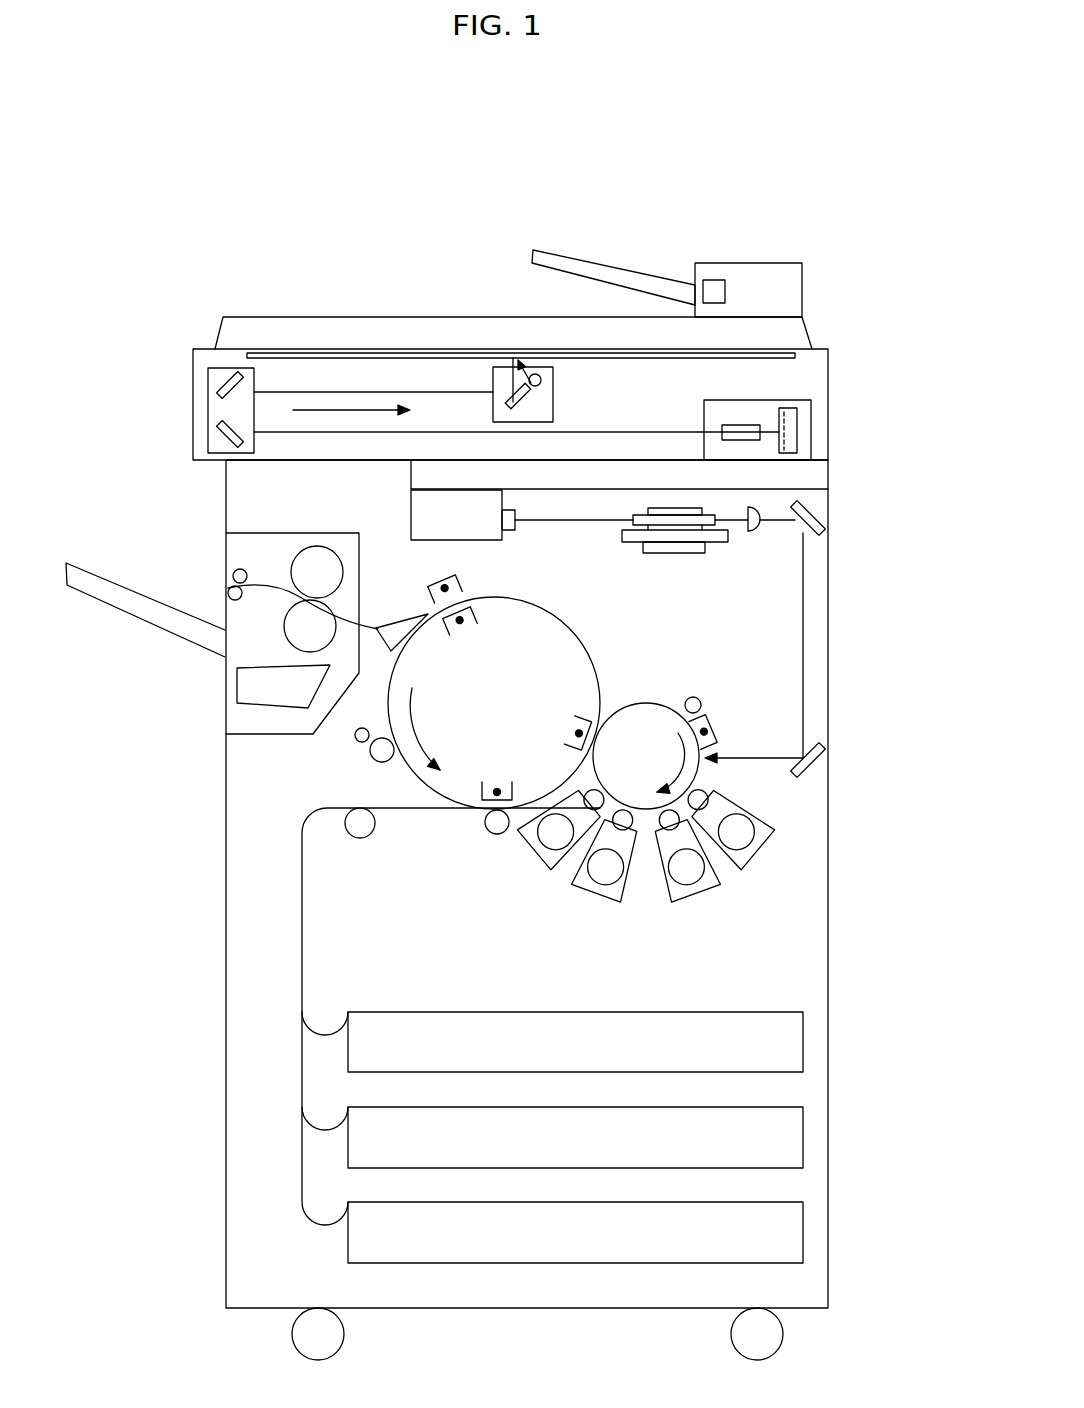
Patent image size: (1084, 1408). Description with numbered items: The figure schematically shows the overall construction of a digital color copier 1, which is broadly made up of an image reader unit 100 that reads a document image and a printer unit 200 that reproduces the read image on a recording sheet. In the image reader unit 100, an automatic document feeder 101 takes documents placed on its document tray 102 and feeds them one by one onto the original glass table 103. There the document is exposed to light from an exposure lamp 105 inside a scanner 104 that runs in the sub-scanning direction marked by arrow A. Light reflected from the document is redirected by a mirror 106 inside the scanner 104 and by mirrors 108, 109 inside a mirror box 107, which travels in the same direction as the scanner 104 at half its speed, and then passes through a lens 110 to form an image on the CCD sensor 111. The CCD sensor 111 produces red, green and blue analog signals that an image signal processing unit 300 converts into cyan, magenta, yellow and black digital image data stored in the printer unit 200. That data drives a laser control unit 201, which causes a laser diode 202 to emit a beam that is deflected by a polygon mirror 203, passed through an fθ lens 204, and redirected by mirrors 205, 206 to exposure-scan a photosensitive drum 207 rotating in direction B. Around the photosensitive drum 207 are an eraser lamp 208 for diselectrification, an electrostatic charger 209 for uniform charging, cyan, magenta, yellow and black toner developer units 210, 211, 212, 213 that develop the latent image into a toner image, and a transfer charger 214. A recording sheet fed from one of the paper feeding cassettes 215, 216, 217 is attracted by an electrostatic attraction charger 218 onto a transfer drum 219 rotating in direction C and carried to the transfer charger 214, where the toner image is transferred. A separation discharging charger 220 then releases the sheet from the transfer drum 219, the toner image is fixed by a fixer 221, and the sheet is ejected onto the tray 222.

The digital color copier 1 is at (528, 155).
The image reader unit 100 is at (873, 335).
The automatic document feeder 101 is at (362, 317).
The document tray 102 is at (593, 258).
The original glass table 103 is at (795, 368).
The scanner 104 is at (553, 405).
The exposure lamp 105 is at (553, 375).
The mirror 106 is at (493, 403).
The mirror box 107 is at (255, 373).
The mirror 108 is at (222, 388).
The mirror 109 is at (222, 437).
The lens 110 is at (725, 425).
The CCD sensor 111 is at (797, 427).
The printer unit 200 is at (887, 722).
The laser control unit 201 is at (422, 512).
The laser diode 202 is at (517, 522).
The polygon mirror 203 is at (686, 553).
The fθ lens 204 is at (756, 533).
The mirror 205 is at (822, 517).
The mirror 206 is at (822, 767).
The photosensitive drum 207 is at (643, 700).
The eraser lamp 208 is at (698, 697).
The electrostatic charger 209 is at (718, 727).
The toner developer unit 210 is at (763, 855).
The toner developer unit 211 is at (697, 893).
The toner developer unit 212 is at (598, 895).
The toner developer unit 213 is at (538, 853).
The transfer charger 214 is at (572, 720).
The paper feeding cassette 215 is at (528, 1012).
The paper feeding cassette 216 is at (522, 1107).
The paper feeding cassette 217 is at (522, 1202).
The electrostatic attraction charger 218 is at (497, 783).
The transfer drum 219 is at (583, 640).
The separation discharging charger 220 is at (462, 583).
The fixer 221 is at (263, 737).
The tray 222 is at (147, 593).
The image signal processing unit 300 is at (803, 489).